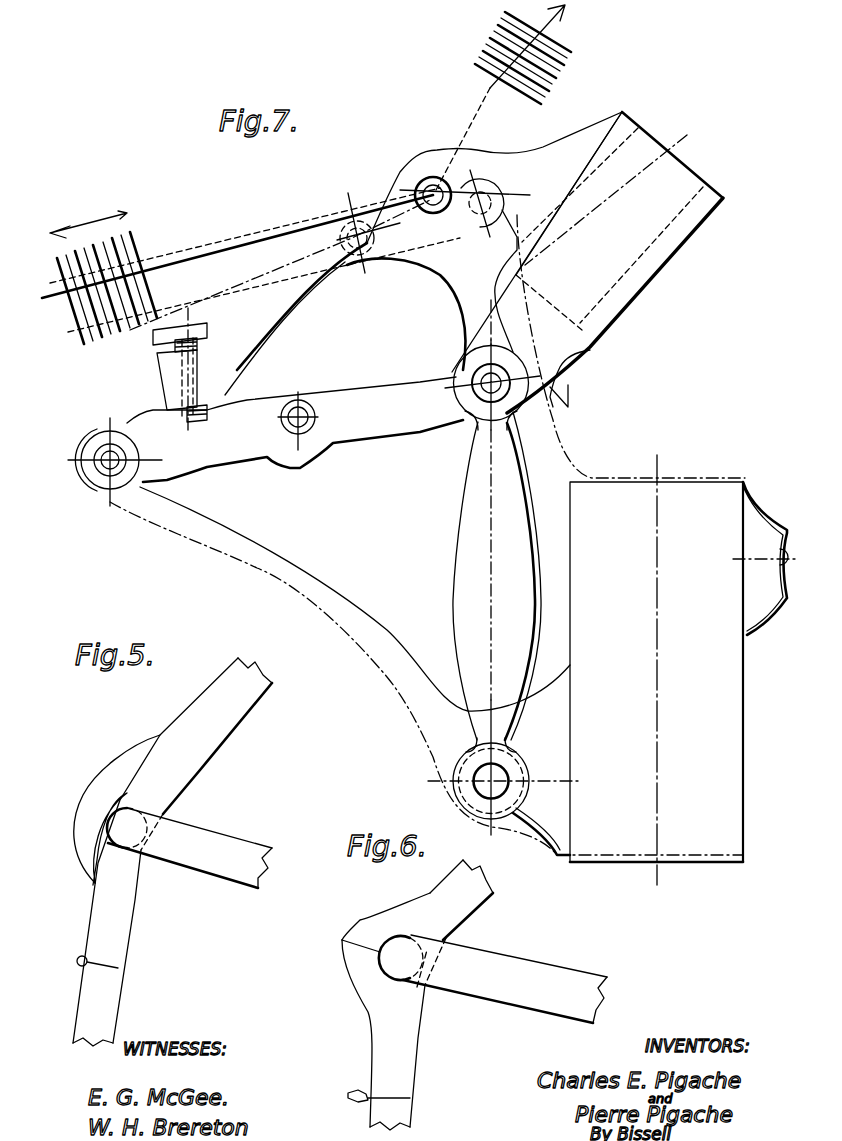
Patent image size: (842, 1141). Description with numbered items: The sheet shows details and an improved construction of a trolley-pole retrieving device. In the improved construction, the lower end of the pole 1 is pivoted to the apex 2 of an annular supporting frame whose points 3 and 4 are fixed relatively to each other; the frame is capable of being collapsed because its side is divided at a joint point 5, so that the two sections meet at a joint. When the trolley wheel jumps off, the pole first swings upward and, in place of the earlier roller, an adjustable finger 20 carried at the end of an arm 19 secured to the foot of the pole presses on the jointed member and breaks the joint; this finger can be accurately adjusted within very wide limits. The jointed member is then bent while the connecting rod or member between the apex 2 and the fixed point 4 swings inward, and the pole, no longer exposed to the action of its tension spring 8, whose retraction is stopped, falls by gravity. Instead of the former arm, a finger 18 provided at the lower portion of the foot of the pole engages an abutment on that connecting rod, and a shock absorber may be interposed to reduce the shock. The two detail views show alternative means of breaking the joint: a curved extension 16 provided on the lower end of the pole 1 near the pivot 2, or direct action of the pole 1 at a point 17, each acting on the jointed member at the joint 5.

In FIG. 5, the pole 1 is at (250, 713).
In FIG. 6, the pole 1 is at (480, 905).
In FIG. 7, the apex of supporting frame 2 is at (478, 388).
In FIG. 5, the apex of supporting frame 2 is at (132, 810).
In FIG. 6, the apex of supporting frame 2 is at (410, 970).
In FIG. 7, the frame point 3 is at (87, 453).
In FIG. 7, the fixed point of frame 4 is at (475, 772).
In FIG. 7, the joint point 5 is at (293, 400).
In FIG. 5, the joint point 5 is at (76, 962).
In FIG. 6, the joint point 5 is at (368, 1096).
In FIG. 7, the tension spring 8 is at (58, 273).
In FIG. 5, the curved extension 16 is at (82, 855).
In FIG. 6, the direct action point of pole 17 is at (352, 935).
In FIG. 7, the finger 18 is at (568, 388).
In FIG. 7, the arm 19 is at (302, 302).
In FIG. 7, the adjustable finger 20 is at (167, 350).